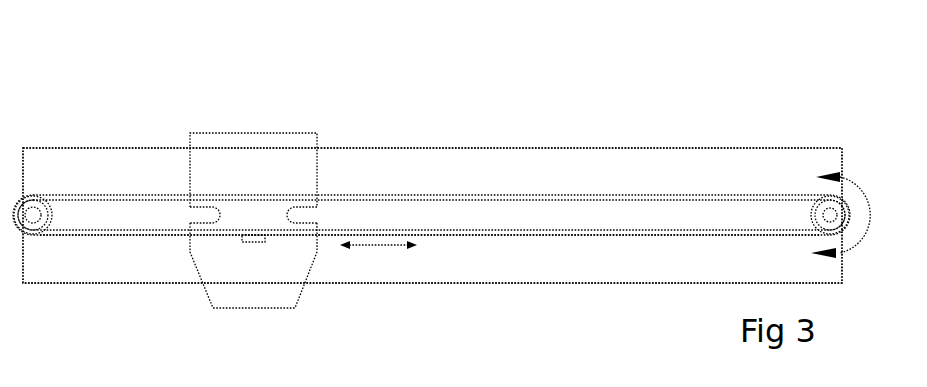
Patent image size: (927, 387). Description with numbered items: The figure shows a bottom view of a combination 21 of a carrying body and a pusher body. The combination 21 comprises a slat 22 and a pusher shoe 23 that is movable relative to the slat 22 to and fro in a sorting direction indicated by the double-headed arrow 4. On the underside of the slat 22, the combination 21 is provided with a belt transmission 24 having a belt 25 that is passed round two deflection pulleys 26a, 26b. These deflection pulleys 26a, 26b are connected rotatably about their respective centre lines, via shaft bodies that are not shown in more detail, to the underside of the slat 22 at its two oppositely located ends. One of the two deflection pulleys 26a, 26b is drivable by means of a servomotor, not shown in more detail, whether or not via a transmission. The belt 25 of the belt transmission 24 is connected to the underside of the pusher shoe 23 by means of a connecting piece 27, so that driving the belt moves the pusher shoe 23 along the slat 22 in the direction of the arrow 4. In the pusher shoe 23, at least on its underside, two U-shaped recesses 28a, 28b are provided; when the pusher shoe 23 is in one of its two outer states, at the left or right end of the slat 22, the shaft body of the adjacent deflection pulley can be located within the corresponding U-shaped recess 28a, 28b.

The combination 21 is at (752, 80).
The slat 22 is at (462, 168).
The pusher shoe 23 is at (211, 152).
The belt transmission 24 is at (492, 250).
The belt 25 is at (622, 195).
The deflection pulley 26a is at (36, 216).
The deflection pulley 26b is at (827, 212).
The connecting piece 27 is at (252, 240).
The U-shaped recess 28a is at (200, 216).
The U-shaped recess 28b is at (300, 215).
The double-headed arrow 4 is at (374, 250).